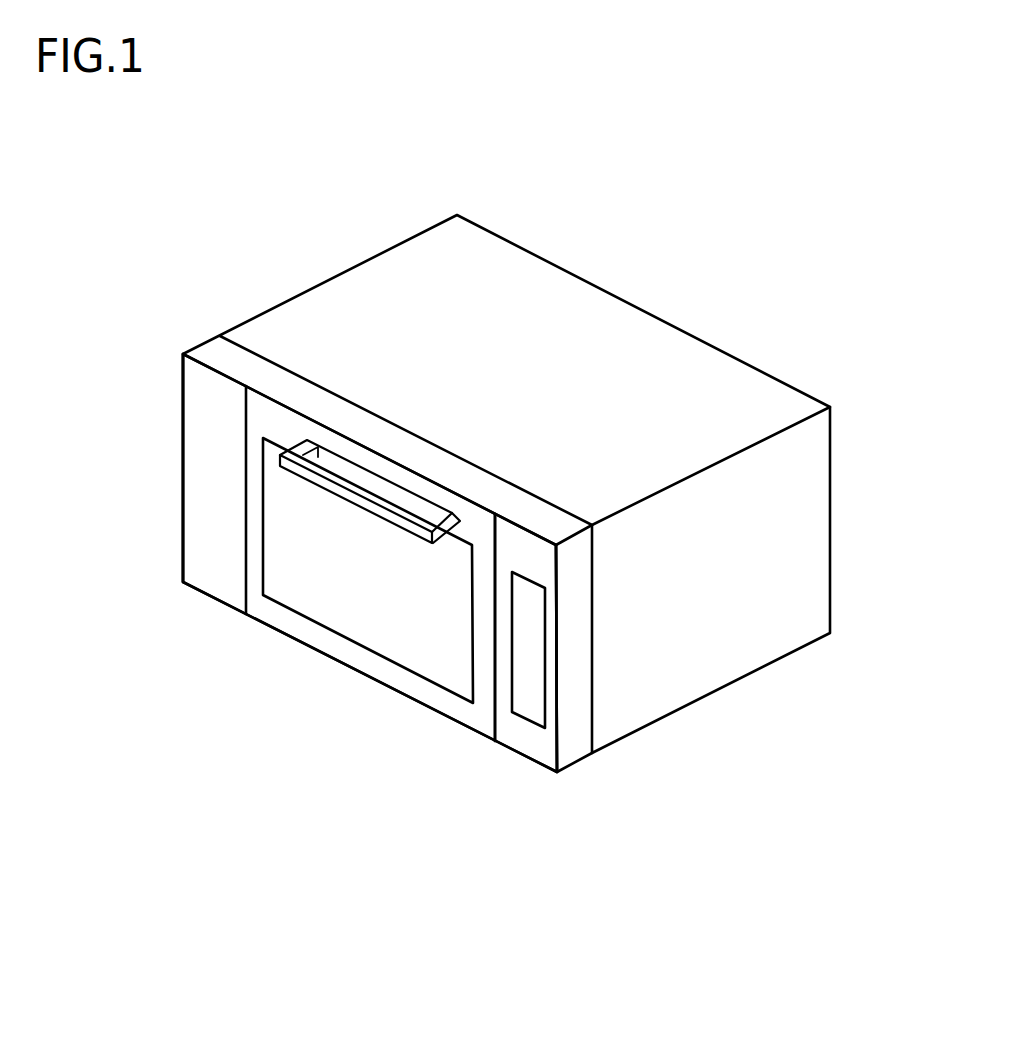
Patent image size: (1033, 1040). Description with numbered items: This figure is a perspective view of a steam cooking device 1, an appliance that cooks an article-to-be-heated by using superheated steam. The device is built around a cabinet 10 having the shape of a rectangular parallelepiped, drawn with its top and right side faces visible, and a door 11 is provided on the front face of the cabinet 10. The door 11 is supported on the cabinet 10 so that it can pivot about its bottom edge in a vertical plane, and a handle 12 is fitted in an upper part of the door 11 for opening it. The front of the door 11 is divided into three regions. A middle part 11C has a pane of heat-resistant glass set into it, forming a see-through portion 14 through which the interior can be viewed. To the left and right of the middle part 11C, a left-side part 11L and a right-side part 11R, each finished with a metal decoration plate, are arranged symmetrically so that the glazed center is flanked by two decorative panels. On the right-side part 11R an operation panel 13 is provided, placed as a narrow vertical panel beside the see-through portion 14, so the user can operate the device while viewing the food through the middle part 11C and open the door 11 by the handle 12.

The steam cooking device 1 is at (317, 248).
The cabinet 10 is at (632, 332).
The door 11 is at (403, 452).
The left-side part 11L is at (217, 567).
The middle part 11C is at (353, 655).
The right-side part 11R is at (523, 735).
The handle 12 is at (325, 483).
The operation panel 13 is at (527, 647).
The see-through portion 14 is at (407, 608).